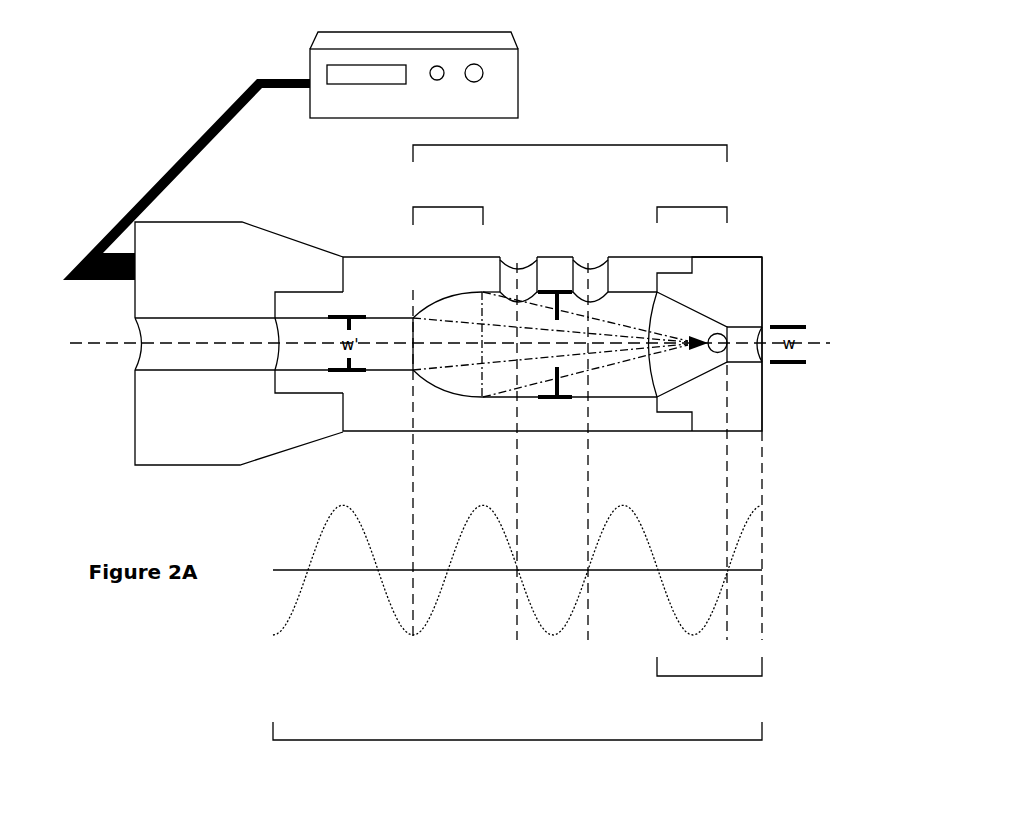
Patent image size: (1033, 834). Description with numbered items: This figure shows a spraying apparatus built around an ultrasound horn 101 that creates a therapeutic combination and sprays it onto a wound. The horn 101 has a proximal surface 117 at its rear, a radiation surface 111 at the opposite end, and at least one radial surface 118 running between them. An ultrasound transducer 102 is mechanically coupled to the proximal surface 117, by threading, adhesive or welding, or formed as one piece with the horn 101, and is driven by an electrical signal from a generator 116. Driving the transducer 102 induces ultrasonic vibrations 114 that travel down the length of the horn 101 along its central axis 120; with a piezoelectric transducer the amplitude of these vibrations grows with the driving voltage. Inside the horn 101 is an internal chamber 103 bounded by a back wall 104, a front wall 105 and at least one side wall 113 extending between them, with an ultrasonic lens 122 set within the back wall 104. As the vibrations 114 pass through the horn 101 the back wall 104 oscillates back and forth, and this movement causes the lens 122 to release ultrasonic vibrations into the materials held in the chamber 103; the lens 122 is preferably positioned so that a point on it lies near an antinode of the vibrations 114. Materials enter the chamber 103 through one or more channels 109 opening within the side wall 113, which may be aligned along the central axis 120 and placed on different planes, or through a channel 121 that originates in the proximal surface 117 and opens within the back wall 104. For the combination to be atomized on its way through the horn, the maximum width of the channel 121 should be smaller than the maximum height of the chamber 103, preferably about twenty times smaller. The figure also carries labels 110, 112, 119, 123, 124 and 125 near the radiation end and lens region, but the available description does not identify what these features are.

The horn 101 is at (553, 740).
The ultrasound transducer 102 is at (218, 288).
The internal chamber 103 is at (657, 145).
The back wall 104 is at (448, 207).
The front wall 105 is at (692, 207).
The channel 109 is at (586, 283).
The outlet aperture 110 is at (740, 340).
The radiation surface 111 is at (758, 292).
The reflector section 112 is at (709, 676).
The side wall 113 is at (577, 397).
The ultrasonic vibrations 114 is at (318, 537).
The generator 116 is at (520, 82).
The proximal surface 117 is at (273, 380).
The radial surface 118 is at (370, 257).
The concave reflector 119 is at (627, 363).
The central axis 120 is at (111, 345).
The channel 121 is at (245, 360).
The ultrasonic lens 122 is at (465, 310).
The lower lens surface 123 is at (442, 388).
The focal point 124 is at (722, 345).
The tapered wall 125 is at (685, 382).